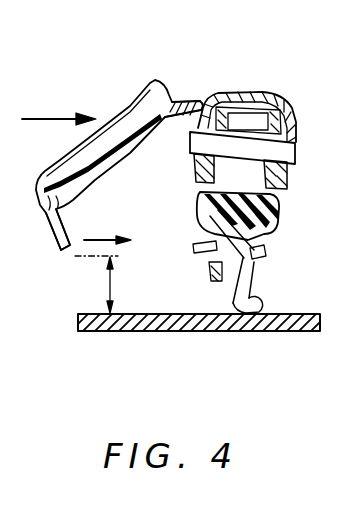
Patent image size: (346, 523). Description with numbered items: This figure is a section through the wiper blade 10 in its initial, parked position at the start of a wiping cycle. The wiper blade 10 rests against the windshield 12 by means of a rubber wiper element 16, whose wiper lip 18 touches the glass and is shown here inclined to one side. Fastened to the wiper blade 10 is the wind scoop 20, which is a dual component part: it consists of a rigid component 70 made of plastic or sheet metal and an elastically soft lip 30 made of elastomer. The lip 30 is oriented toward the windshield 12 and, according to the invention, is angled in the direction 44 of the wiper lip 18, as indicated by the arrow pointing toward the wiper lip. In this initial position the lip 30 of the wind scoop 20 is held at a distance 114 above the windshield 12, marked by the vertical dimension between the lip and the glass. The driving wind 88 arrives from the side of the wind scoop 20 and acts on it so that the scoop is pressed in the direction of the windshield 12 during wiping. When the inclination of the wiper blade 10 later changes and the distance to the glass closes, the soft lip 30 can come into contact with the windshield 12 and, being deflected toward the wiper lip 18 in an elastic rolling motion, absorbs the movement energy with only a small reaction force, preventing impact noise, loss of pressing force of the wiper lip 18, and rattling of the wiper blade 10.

The wiper blade 10 is at (300, 86).
The windshield 12 is at (300, 333).
The rubber wiper element 16 is at (218, 246).
The wiper lip 18 is at (258, 326).
The wind scoop 20 is at (153, 70).
The lip 30 is at (53, 226).
The direction of the wiper lip 44 is at (109, 240).
The rigid component 70 is at (168, 88).
The driving wind 88 is at (55, 117).
The distance 114 is at (108, 284).